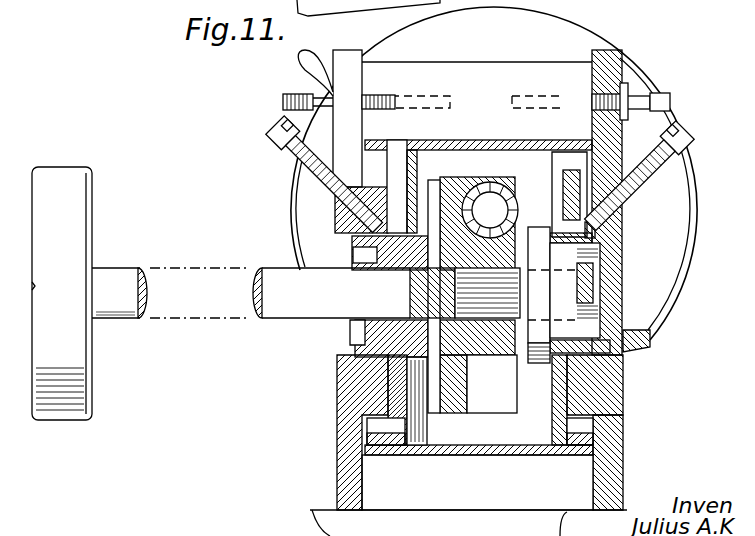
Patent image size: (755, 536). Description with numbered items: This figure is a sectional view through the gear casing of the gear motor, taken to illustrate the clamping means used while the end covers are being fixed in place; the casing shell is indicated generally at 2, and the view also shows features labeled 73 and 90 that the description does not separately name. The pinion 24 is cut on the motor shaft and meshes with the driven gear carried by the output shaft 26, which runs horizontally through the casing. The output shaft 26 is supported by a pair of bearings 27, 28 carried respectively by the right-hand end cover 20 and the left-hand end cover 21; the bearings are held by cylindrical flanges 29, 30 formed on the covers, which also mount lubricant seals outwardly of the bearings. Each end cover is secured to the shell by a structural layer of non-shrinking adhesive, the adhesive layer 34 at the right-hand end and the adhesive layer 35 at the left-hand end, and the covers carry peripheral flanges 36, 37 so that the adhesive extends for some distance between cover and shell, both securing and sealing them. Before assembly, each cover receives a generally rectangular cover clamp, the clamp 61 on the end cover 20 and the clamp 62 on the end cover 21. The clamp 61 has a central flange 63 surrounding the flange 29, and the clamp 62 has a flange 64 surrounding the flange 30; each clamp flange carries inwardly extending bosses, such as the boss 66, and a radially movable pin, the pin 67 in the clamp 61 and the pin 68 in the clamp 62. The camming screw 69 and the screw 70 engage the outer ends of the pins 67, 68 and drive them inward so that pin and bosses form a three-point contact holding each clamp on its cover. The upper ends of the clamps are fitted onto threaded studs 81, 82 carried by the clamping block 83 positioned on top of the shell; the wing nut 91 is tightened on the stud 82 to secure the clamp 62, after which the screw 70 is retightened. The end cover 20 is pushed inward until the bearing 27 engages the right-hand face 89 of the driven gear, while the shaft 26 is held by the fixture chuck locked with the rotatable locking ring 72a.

The casing 2 is at (601, 35).
The end cover 20 is at (560, 180).
The end cover 21 is at (402, 183).
The pinion 24 is at (490, 192).
The output shaft 26 is at (287, 288).
The bearing 27 is at (567, 260).
The bearing 28 is at (352, 334).
The cylindrical flange 29 is at (650, 345).
The cylindrical flange 30 is at (382, 360).
The adhesive layer 34 is at (572, 450).
The adhesive layer 35 is at (398, 447).
The peripheral flange 36 is at (580, 437).
The peripheral flange 37 is at (383, 432).
The cover clamp 61 is at (622, 452).
The cover clamp 62 is at (337, 398).
The flange 63 is at (577, 390).
The flange 64 is at (388, 405).
The boss 66 is at (583, 358).
The pin 67 is at (595, 230).
The pin 68 is at (355, 228).
The camming screw 69 is at (643, 170).
The screw 70 is at (305, 153).
The rotatable locking ring 72a is at (80, 213).
The cam member 73 is at (422, 198).
The threaded stud 81 is at (670, 100).
The threaded stud 82 is at (283, 100).
The clamping block 83 is at (487, 72).
The right-hand face 89 is at (527, 343).
The nut 90 is at (630, 92).
The wing nut 91 is at (305, 62).